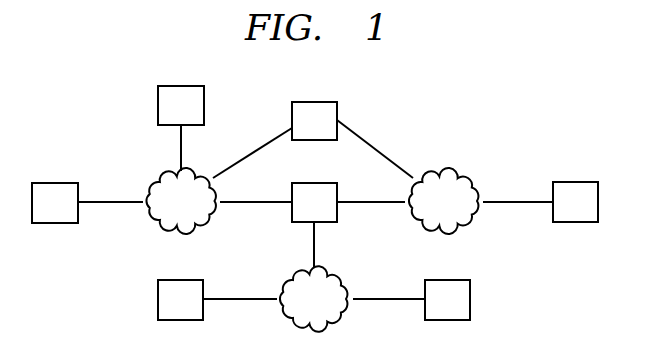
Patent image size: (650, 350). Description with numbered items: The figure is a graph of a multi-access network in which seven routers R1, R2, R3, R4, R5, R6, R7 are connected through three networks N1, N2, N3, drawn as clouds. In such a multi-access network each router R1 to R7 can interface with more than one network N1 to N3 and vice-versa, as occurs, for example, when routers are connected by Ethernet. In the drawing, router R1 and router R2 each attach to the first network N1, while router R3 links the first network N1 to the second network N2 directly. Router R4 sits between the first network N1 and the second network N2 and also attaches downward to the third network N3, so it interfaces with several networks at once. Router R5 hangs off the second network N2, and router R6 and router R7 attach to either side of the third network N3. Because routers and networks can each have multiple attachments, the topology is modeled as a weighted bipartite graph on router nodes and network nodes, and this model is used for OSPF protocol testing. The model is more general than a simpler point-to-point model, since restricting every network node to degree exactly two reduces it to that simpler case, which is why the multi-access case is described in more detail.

The router R1 is at (87, 203).
The router R2 is at (181, 128).
The router R3 is at (313, 140).
The router R4 is at (312, 225).
The router R5 is at (540, 202).
The router R6 is at (217, 300).
The router R7 is at (411, 300).
The network N1 is at (180, 201).
The network N2 is at (443, 201).
The network N3 is at (313, 298).